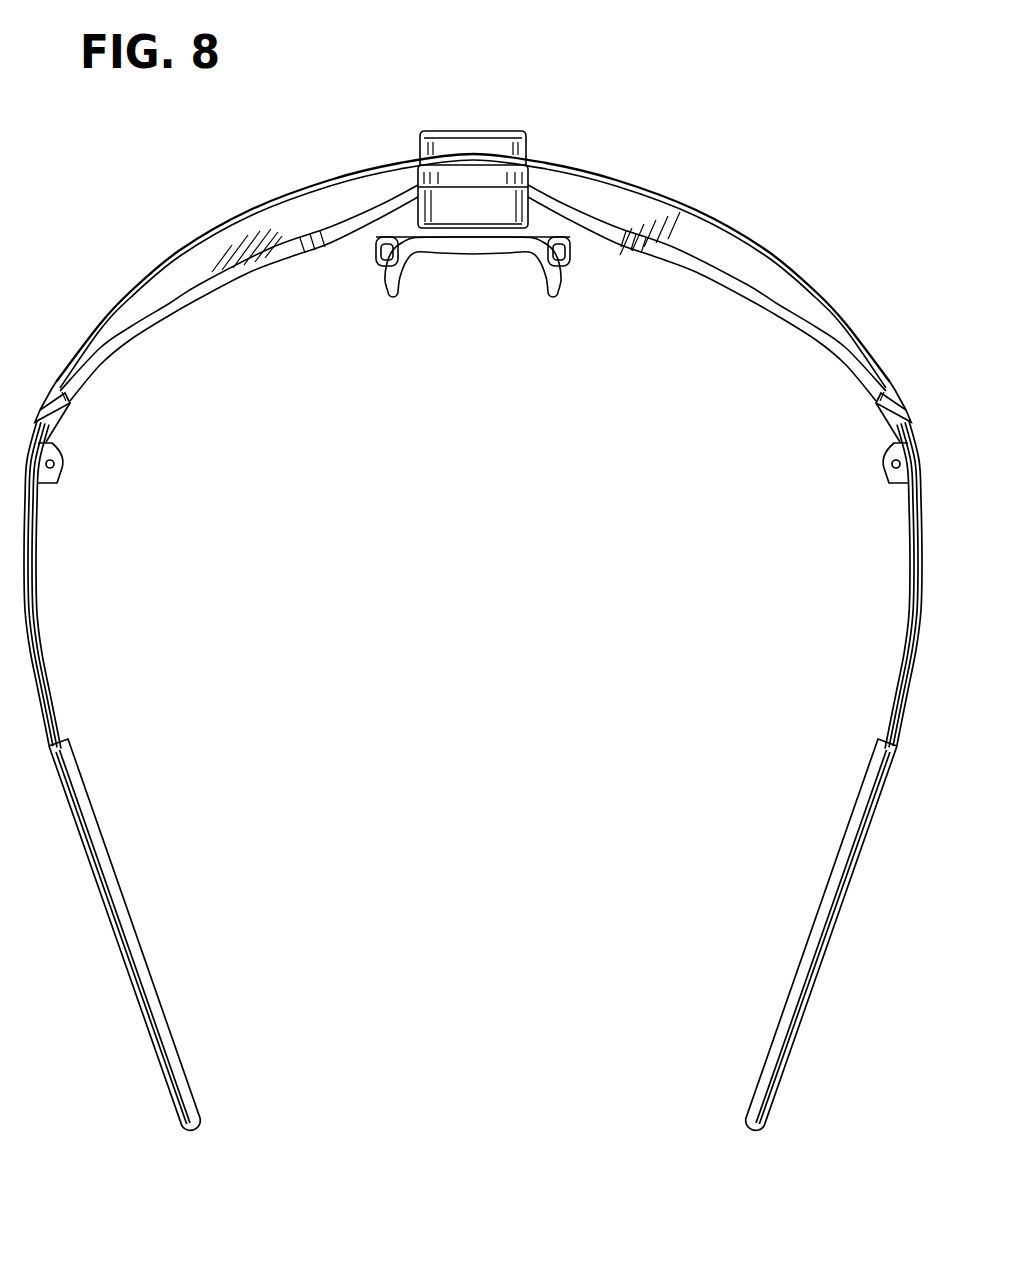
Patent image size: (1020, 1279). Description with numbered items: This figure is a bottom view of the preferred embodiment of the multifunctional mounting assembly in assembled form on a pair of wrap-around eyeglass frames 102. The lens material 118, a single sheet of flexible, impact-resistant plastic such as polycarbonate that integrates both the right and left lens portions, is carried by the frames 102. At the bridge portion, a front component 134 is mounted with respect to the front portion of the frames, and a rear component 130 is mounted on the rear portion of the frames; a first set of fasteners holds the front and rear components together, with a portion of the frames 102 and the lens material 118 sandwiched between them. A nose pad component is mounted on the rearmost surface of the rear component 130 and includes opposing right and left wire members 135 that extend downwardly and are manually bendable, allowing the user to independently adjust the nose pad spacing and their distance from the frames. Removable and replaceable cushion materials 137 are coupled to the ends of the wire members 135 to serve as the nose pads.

The wrap-around frames 102 is at (725, 222).
The lens material 118 is at (313, 235).
The rear component 130 is at (408, 206).
The front component 134 is at (455, 104).
The wire members 135 is at (377, 253).
The cushion materials 137 is at (422, 266).